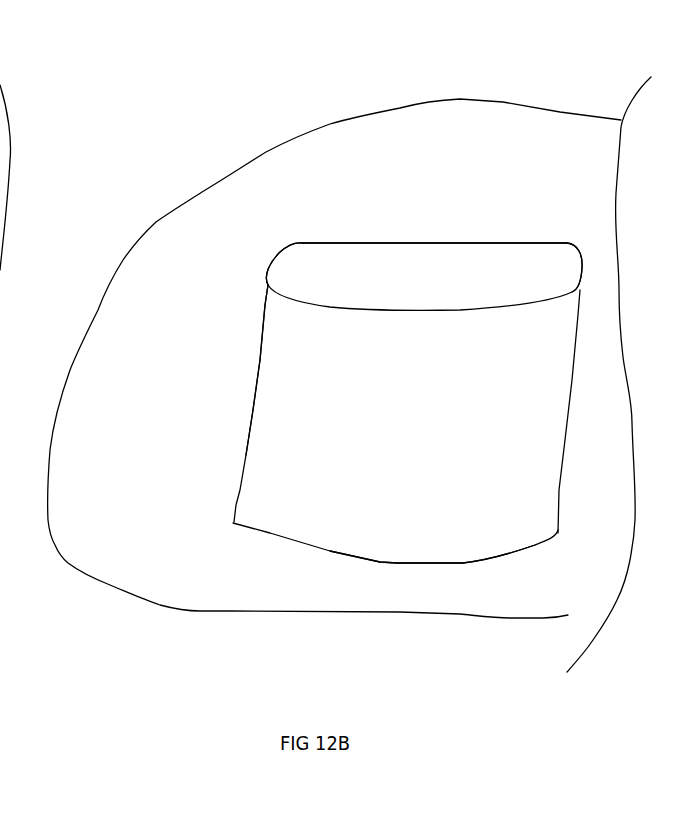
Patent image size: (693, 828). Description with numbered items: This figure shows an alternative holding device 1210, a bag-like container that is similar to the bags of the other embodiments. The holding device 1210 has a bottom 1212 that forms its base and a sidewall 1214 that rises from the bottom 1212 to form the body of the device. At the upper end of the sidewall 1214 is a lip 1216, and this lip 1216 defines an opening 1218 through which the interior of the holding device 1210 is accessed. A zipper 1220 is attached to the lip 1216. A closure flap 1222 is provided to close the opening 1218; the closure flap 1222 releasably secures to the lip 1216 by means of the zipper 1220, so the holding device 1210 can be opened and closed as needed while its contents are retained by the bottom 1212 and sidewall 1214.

The holding device 1210 is at (391, 556).
The bottom 1212 is at (447, 578).
The sidewall 1214 is at (280, 363).
The lip 1216 is at (268, 270).
The opening 1218 is at (328, 214).
The zipper 1220 is at (467, 290).
The closure flap 1222 is at (398, 257).